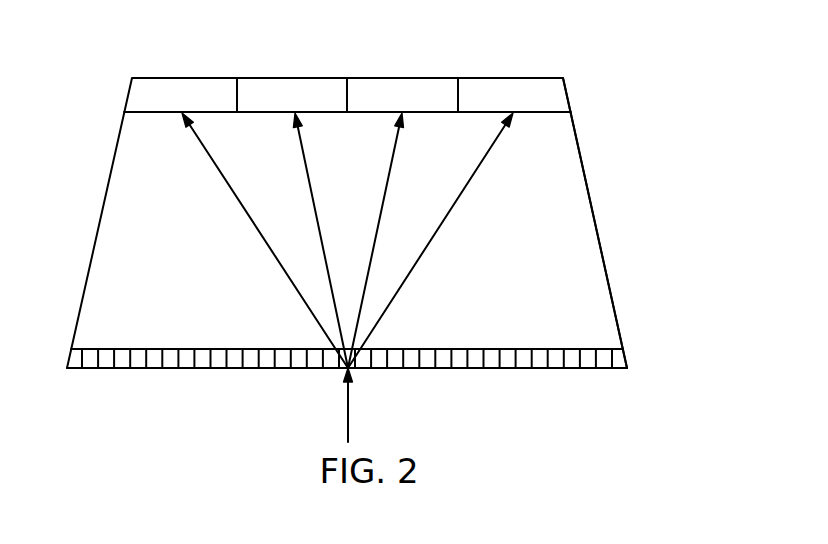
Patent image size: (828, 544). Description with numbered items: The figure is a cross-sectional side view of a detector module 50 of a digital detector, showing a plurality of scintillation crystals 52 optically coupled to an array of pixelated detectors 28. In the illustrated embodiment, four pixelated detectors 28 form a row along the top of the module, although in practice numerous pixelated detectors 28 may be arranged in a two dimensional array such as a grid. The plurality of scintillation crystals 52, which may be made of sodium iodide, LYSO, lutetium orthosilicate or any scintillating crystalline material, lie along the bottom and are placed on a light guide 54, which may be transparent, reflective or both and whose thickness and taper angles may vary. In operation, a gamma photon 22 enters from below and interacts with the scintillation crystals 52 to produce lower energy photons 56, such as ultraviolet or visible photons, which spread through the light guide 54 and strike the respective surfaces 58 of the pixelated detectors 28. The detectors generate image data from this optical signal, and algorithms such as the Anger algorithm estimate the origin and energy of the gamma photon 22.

The gamma photons 22 is at (349, 418).
The pixelated detectors 28 is at (158, 78).
The detector module 50 is at (601, 70).
The scintillation crystals 52 is at (655, 358).
The light guide 54 is at (605, 267).
The lower energy photons 56 is at (436, 233).
The surfaces 58 is at (156, 113).